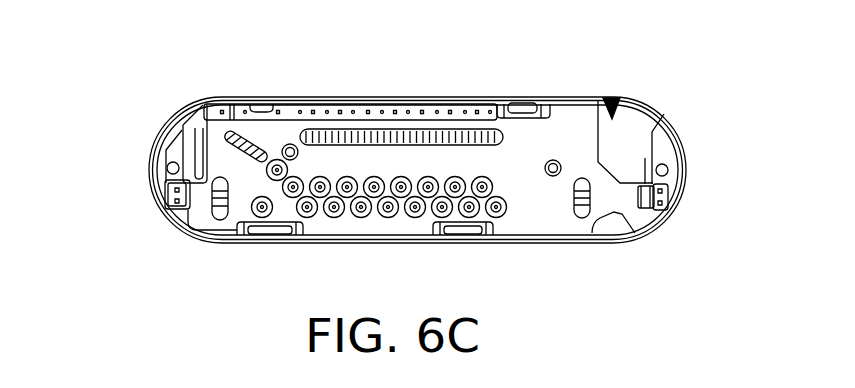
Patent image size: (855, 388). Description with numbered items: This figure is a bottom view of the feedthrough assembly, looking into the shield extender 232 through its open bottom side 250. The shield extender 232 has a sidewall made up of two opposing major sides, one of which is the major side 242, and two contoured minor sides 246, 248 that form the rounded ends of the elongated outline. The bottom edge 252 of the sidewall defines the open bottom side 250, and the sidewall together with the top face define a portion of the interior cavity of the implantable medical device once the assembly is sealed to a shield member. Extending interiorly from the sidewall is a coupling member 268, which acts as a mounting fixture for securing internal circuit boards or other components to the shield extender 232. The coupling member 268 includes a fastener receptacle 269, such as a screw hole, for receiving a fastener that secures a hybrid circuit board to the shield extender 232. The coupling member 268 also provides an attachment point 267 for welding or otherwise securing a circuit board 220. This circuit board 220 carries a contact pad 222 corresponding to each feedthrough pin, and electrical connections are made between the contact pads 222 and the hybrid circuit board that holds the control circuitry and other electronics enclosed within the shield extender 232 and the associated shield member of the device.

The circuit board 220 is at (630, 203).
The contact pad 222 is at (253, 210).
The shield extender 232 is at (197, 107).
The major side 242 is at (512, 100).
The contoured minor side 246 is at (683, 148).
The contoured minor side 248 is at (145, 170).
The open bottom side 250 is at (613, 103).
The bottom edge 252 is at (463, 243).
The attachment point 267 is at (665, 197).
The coupling member 268 is at (657, 143).
The fastener receptacle 269 is at (167, 120).